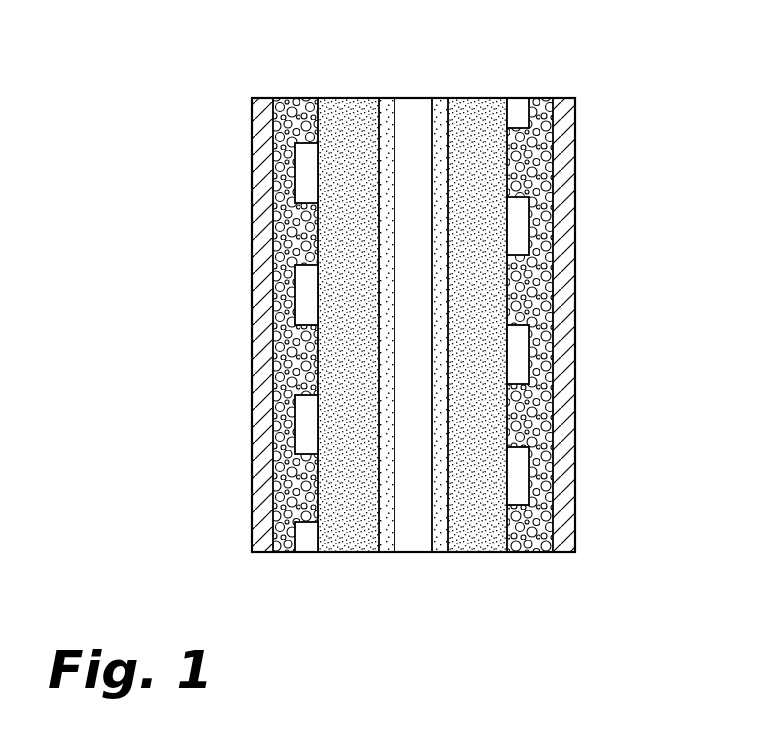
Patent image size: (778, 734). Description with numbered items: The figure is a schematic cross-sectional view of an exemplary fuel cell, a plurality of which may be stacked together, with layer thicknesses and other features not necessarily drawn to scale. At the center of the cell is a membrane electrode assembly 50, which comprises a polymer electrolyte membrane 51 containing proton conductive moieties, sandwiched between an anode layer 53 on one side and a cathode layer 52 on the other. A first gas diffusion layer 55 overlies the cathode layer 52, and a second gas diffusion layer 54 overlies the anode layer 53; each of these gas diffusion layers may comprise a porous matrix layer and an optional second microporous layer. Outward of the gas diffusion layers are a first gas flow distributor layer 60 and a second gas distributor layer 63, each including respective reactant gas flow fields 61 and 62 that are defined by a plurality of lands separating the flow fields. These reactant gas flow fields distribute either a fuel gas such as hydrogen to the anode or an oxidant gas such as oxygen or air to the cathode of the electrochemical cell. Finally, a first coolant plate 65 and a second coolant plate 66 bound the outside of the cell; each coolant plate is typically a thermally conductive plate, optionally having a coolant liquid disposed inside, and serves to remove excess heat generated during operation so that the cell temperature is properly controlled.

The membrane electrode assembly 50 is at (425, 336).
The polymer electrolyte membrane 51 is at (410, 110).
The cathode layer 52 is at (440, 98).
The anode layer 53 is at (385, 98).
The second gas diffusion layer 54 is at (355, 547).
The first gas diffusion layer 55 is at (481, 537).
The first gas flow distributor layer 60 is at (541, 98).
The reactant gas flow fields 61 is at (520, 215).
The reactant gas flow fields 62 is at (300, 287).
The second gas distributor layer 63 is at (284, 98).
The first coolant plate 65 is at (567, 367).
The second coolant plate 66 is at (252, 407).